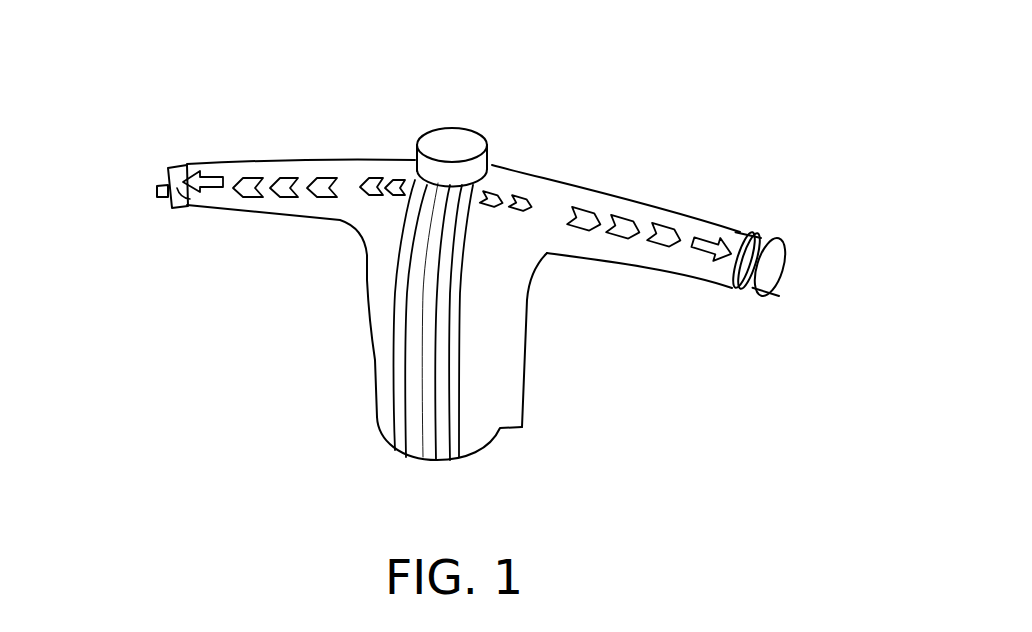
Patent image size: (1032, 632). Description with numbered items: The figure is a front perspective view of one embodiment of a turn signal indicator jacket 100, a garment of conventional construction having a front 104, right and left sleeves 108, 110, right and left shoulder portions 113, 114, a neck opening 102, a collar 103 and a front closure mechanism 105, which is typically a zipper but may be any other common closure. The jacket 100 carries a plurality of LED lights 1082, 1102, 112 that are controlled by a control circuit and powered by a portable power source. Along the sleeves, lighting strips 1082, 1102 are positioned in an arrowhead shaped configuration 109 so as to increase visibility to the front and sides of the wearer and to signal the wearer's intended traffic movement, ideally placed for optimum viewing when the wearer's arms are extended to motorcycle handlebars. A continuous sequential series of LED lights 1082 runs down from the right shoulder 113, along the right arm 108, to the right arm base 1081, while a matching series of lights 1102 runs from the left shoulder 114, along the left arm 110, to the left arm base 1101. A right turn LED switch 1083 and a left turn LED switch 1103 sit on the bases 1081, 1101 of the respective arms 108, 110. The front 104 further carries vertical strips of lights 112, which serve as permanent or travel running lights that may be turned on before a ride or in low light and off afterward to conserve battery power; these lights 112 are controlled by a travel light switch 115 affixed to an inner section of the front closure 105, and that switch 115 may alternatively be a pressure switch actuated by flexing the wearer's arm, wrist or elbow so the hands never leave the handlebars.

The turn signal indicator jacket 100 is at (186, 104).
The neck opening 102 is at (451, 144).
The collar 103 is at (476, 150).
The front 104 is at (387, 297).
The front closure mechanism 105 is at (421, 443).
The right arm or sleeve 108 is at (273, 198).
The right arm base 1081 is at (186, 201).
The LED lights / lighting strips 1082 is at (168, 172).
The right turn LED button or switch 1083 is at (157, 193).
The arrowhead shaped configuration 109 is at (291, 156).
The left arm or sleeve 110 is at (740, 231).
The left arm base 1101 is at (755, 257).
The LED lights / lighting strips 1102 is at (722, 255).
The left turn LED button or switch 1103 is at (763, 280).
The vertical strips of lights 112 is at (443, 357).
The right shoulder portion 113 is at (382, 149).
The left shoulder portion 114 is at (537, 174).
The travel light switch 115 is at (450, 468).